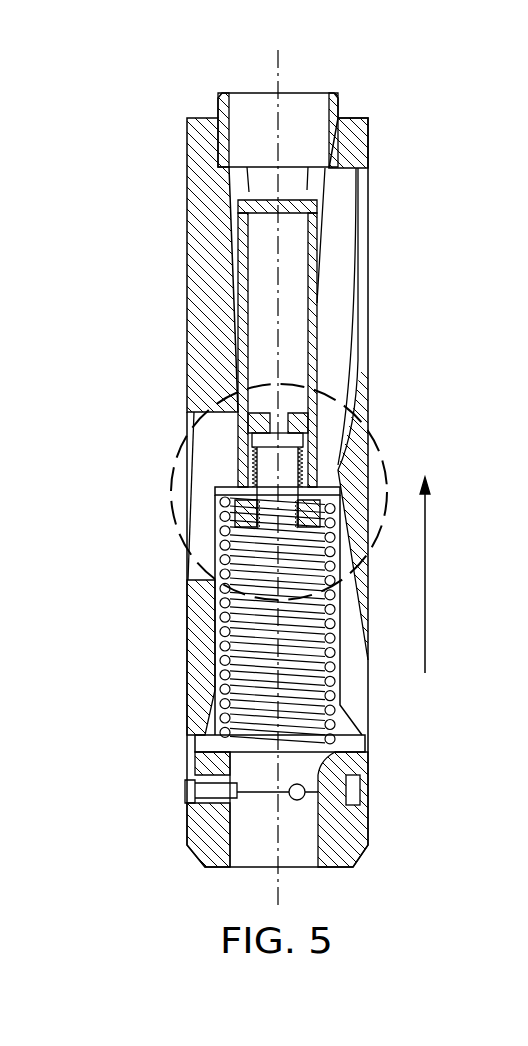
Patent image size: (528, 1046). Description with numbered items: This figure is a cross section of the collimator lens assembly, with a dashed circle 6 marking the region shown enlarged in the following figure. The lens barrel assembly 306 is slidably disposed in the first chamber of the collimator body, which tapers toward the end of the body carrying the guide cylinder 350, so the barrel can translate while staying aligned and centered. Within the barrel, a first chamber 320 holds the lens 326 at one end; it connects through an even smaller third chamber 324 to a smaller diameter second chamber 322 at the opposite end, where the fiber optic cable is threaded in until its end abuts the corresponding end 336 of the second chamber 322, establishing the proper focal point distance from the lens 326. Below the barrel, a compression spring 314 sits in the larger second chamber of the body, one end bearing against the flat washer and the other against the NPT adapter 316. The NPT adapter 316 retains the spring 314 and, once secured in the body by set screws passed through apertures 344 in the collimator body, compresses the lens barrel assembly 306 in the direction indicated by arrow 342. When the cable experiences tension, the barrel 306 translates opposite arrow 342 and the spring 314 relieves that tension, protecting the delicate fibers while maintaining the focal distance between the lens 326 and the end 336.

The guide cylinder 350 is at (338, 95).
The lens barrel assembly 306 is at (320, 257).
The lens 326 is at (240, 207).
The first chamber 320 is at (218, 343).
The third chamber 324 is at (262, 425).
The second chamber 322 is at (265, 476).
The end of the second chamber 336 is at (293, 443).
The compression spring 314 is at (220, 646).
The aperture 344 is at (305, 790).
The NPT adapter 316 is at (337, 830).
The arrow 342 is at (425, 583).
The detail circle for FIG. 6 is at (170, 492).